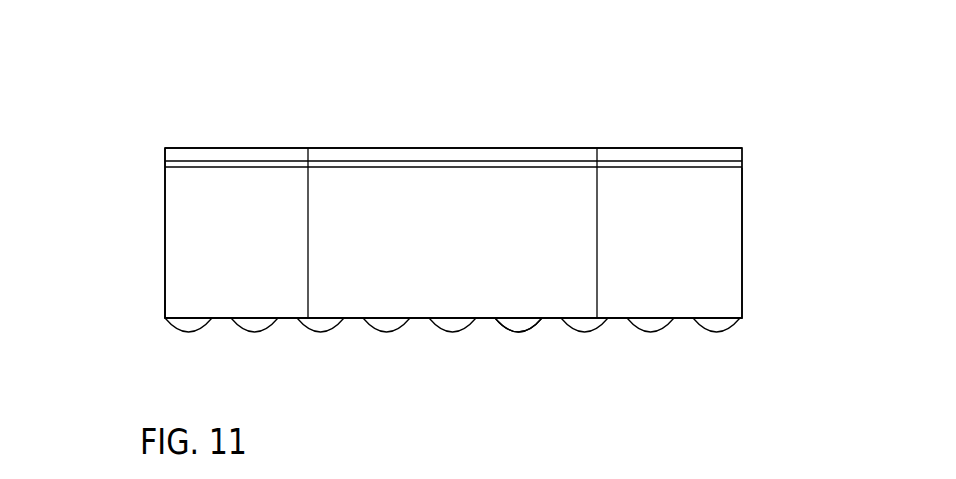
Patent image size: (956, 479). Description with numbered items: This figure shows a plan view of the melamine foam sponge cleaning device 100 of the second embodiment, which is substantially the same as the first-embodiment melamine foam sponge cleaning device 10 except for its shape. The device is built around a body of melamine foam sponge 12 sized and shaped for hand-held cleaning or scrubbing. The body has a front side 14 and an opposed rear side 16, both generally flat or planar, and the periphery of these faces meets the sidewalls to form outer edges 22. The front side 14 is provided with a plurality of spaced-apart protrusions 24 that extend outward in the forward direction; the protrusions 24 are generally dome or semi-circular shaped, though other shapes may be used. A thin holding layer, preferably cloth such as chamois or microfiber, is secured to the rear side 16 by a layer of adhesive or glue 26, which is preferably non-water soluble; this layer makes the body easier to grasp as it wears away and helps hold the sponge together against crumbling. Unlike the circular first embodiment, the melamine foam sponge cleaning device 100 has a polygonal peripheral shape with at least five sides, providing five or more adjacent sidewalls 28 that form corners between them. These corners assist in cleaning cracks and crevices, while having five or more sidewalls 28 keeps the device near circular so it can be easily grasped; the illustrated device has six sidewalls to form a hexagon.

The melamine foam sponge cleaning device 100 is at (171, 99).
The melamine foam sponge cleaning device 10 is at (716, 147).
The body of melamine foam sponge 12 is at (747, 302).
The front side 14 is at (354, 320).
The rear side 16 is at (659, 160).
The outer edges 22 is at (165, 160).
The protrusions 24 is at (522, 322).
The adhesive or glue 26 is at (618, 158).
The sidewalls 28 is at (163, 236).